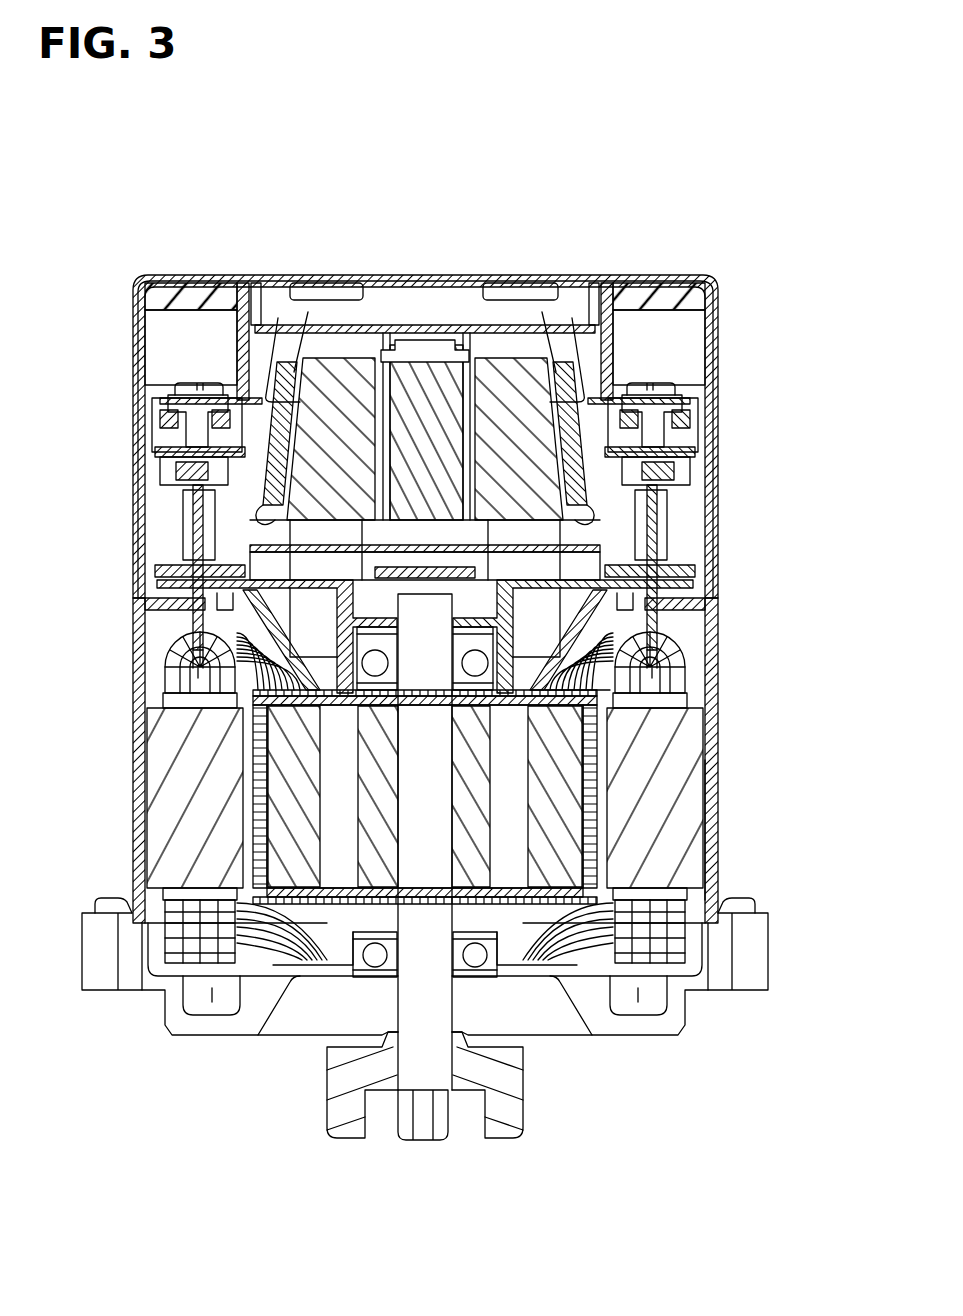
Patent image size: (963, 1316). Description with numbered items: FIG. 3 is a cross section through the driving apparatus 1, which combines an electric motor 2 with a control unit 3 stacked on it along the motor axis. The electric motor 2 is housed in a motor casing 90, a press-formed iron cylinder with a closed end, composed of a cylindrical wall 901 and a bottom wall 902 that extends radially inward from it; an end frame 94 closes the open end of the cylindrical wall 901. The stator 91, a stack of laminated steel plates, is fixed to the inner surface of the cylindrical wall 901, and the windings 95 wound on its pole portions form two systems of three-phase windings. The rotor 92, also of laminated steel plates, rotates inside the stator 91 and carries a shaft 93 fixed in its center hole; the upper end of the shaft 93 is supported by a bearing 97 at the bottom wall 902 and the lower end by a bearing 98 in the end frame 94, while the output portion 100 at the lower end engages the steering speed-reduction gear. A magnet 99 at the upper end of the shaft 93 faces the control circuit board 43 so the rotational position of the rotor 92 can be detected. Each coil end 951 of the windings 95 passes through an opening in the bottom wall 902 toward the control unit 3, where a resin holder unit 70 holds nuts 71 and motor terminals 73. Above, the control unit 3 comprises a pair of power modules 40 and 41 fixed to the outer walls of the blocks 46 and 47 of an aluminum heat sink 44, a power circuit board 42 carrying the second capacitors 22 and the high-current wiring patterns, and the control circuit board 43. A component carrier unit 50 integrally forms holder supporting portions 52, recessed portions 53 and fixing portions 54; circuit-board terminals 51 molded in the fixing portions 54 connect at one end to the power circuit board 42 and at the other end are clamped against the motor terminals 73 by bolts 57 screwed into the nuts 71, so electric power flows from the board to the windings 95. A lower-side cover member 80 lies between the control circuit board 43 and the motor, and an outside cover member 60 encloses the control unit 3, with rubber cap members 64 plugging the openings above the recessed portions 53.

The driving apparatus 1 is at (688, 171).
The electric motor 2 is at (105, 726).
The control unit 3 is at (105, 316).
The second capacitors 22 is at (415, 375).
The power module 40 is at (295, 298).
The power module 41 is at (562, 350).
The power circuit board 42 is at (385, 340).
The control circuit board 43 is at (283, 549).
The heat sink 44 is at (352, 298).
The block 46 is at (321, 350).
The block 47 is at (515, 298).
The component carrier unit 50 is at (160, 408).
The circuit-board terminals 51 is at (267, 298).
The holder supporting portions 52 is at (190, 466).
The recessed portions 53 is at (150, 348).
The fixing portions 54 is at (232, 298).
The bolts 57 is at (188, 386).
The outside cover member 60 is at (473, 277).
The cap member 64 is at (165, 297).
The holder unit 70 is at (195, 494).
The nut 71 is at (200, 420).
The motor terminals 73 is at (200, 515).
The lower-side cover member 80 is at (272, 632).
The motor casing 90 is at (135, 851).
The stator 91 is at (175, 815).
The rotor 92 is at (300, 762).
The shaft 93 is at (410, 992).
The end frame 94 is at (680, 1025).
The windings 95 is at (175, 672).
The bearing 97 is at (505, 718).
The bearing 98 is at (480, 968).
The magnet 99 is at (235, 645).
The output portion 100 is at (352, 1130).
The cylindrical wall 901 is at (710, 845).
The bottom wall 902 is at (570, 692).
The coil end 951 is at (205, 604).